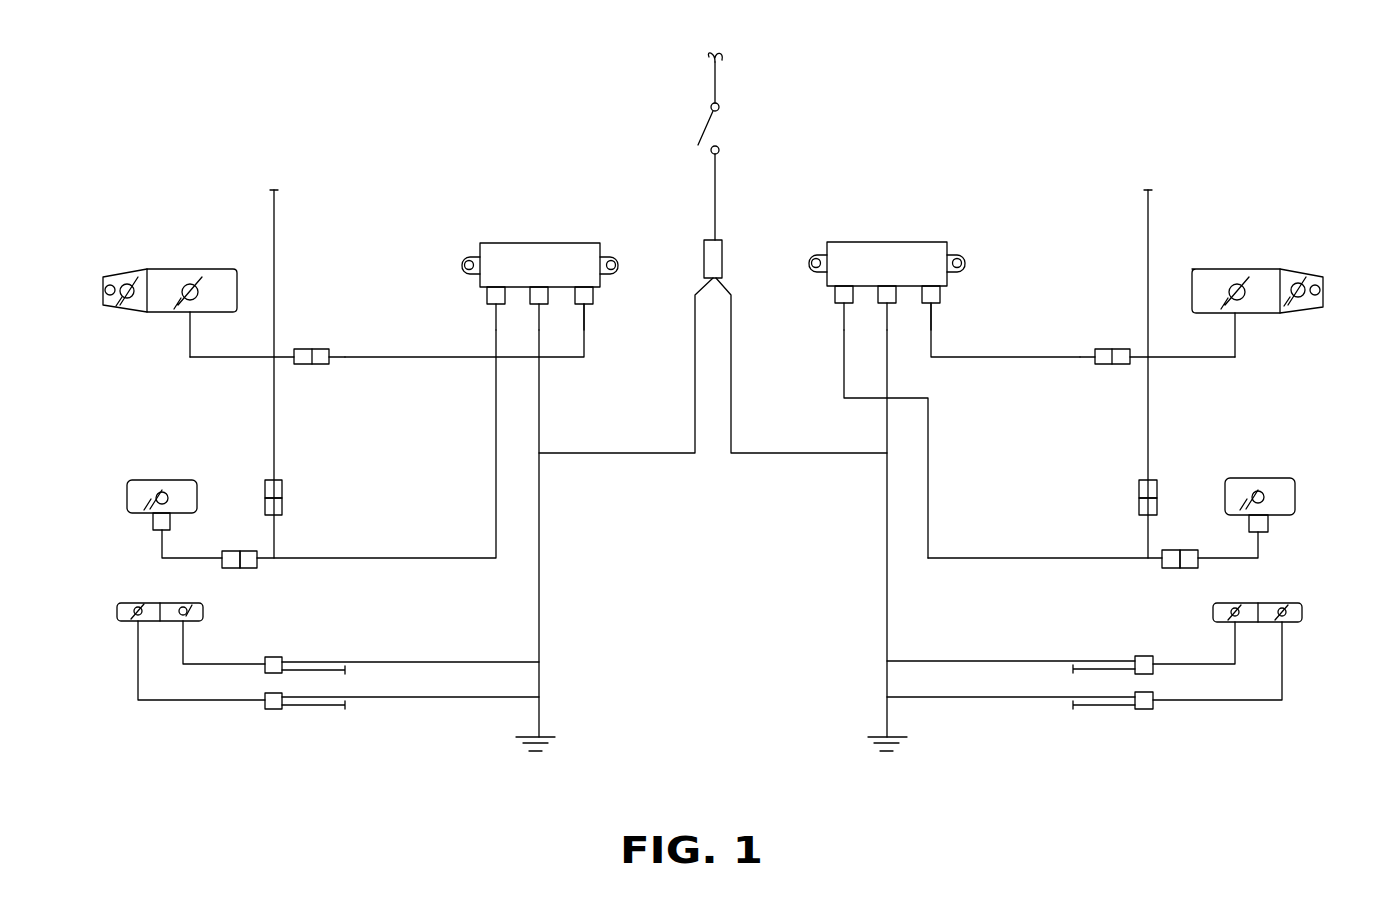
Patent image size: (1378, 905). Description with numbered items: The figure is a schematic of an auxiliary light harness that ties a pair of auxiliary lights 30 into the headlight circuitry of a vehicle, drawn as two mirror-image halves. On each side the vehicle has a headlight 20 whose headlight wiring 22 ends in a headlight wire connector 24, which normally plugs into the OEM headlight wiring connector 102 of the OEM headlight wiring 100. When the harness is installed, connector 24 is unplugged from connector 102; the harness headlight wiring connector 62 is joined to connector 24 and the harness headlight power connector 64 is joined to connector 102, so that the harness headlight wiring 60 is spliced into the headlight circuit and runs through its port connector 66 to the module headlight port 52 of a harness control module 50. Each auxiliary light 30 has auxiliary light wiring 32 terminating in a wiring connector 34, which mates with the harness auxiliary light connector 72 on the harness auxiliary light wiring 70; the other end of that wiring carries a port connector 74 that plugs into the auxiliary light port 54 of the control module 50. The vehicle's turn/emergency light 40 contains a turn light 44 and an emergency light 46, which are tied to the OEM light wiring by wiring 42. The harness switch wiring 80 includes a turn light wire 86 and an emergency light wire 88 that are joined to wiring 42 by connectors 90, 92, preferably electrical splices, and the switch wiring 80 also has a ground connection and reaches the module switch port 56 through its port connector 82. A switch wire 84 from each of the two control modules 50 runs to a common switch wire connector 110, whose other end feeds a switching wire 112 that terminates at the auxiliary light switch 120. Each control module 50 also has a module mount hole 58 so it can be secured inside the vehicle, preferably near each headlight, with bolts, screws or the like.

The headlight 20 is at (140, 486).
The headlight wiring 22 is at (162, 546).
The headlight wire connector 24 is at (223, 551).
The auxiliary light 30 is at (173, 280).
The auxiliary light wiring 32 is at (190, 357).
The wiring connector 34 is at (302, 349).
The turn/emergency light 40 is at (154, 592).
The wiring 42 is at (213, 664).
The turn light 44 is at (140, 608).
The emergency light 46 is at (186, 609).
The harness control module 50 is at (520, 242).
The module headlight port 52 is at (497, 296).
The auxiliary light port 54 is at (582, 295).
The module switch port 56 is at (540, 290).
The module mount hole 58 is at (468, 262).
The harness headlight wiring 60 is at (467, 558).
The harness headlight wiring connector 62 is at (248, 551).
The harness headlight power connector 64 is at (277, 508).
The port connector 66 is at (494, 305).
The harness auxiliary light wiring 70 is at (357, 356).
The harness auxiliary light connector 72 is at (325, 348).
The port connector 74 is at (587, 305).
The harness switch wiring 80 is at (541, 408).
The port connector 82 is at (540, 307).
The switch wire 84 is at (693, 420).
The turn light wire 86 is at (448, 698).
The emergency light wire 88 is at (420, 660).
The connector 90 is at (278, 710).
The connector 92 is at (280, 657).
The OEM headlight wiring 100 is at (275, 209).
The OEM headlight wiring connector 102 is at (282, 488).
The switch wire connector 110 is at (713, 250).
The switching wire 112 is at (717, 180).
The auxiliary light switch 120 is at (718, 112).